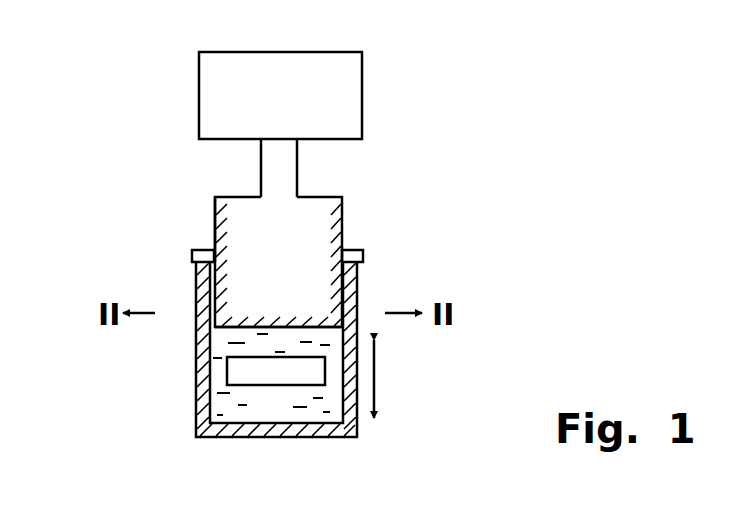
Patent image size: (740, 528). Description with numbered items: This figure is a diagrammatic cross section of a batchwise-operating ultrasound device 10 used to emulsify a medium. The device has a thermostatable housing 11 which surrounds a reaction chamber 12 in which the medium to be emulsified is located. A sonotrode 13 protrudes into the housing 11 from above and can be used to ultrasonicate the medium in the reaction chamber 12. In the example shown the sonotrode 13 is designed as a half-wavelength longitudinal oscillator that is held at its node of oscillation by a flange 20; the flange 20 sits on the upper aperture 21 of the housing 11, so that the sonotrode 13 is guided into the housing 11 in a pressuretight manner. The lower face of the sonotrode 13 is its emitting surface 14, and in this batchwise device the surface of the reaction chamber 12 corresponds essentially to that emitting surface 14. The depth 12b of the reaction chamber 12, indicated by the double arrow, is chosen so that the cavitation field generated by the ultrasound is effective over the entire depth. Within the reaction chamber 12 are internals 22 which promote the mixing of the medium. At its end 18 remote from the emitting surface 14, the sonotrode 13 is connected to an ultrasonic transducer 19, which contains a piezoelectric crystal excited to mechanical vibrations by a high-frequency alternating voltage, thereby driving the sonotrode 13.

The ultrasound device 10 is at (416, 50).
The thermostatable housing 11 is at (203, 398).
The reaction chamber 12 is at (222, 348).
The depth of the reaction chamber 12b is at (374, 377).
The sonotrode 13 is at (298, 223).
The emitting surface 14 is at (289, 327).
The end of the sonotrode 18 is at (290, 147).
The ultrasonic transducer 19 is at (228, 97).
The flange 20 is at (200, 255).
The upper aperture 21 is at (203, 217).
The internals 22 is at (280, 375).